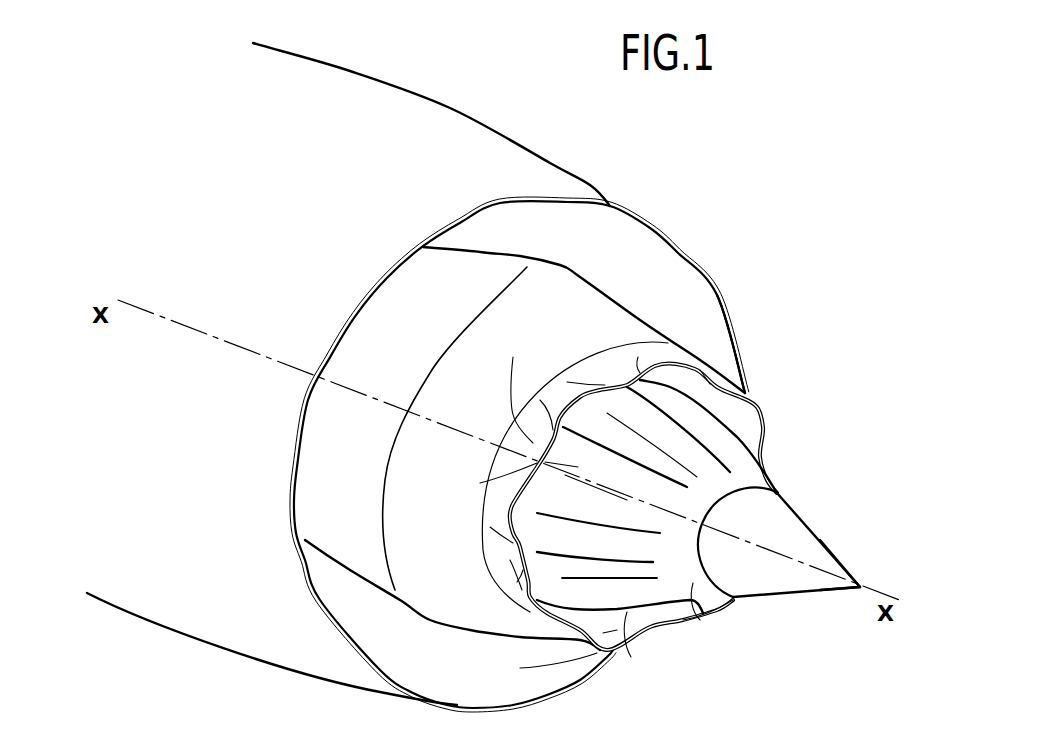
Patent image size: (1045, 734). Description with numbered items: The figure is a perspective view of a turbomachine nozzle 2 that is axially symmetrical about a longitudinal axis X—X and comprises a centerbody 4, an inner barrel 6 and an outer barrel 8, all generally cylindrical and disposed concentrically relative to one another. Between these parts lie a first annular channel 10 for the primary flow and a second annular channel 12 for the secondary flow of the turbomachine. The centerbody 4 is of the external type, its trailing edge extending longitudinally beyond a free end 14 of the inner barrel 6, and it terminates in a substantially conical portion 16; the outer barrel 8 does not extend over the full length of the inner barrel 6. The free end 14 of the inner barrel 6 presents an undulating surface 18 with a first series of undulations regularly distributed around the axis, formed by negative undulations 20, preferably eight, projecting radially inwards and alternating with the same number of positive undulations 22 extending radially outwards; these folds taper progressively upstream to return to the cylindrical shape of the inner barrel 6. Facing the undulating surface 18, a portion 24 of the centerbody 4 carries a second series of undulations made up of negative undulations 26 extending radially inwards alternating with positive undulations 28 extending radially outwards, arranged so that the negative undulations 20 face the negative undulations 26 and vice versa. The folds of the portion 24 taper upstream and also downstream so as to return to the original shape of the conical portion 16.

The nozzle 2 is at (715, 263).
The centerbody 4 is at (785, 475).
The inner barrel 6 is at (632, 306).
The outer barrel 8 is at (402, 80).
The first annular channel 10 is at (735, 417).
The second annular channel 12 is at (513, 222).
The free end 14 is at (712, 363).
The conical portion 16 is at (840, 557).
The undulating surface 18 is at (510, 563).
The negative undulations 20 is at (610, 372).
The positive undulations 22 is at (507, 607).
The portion of the centerbody 24 is at (703, 617).
The negative undulations 26 is at (537, 460).
The positive undulations 28 is at (655, 620).